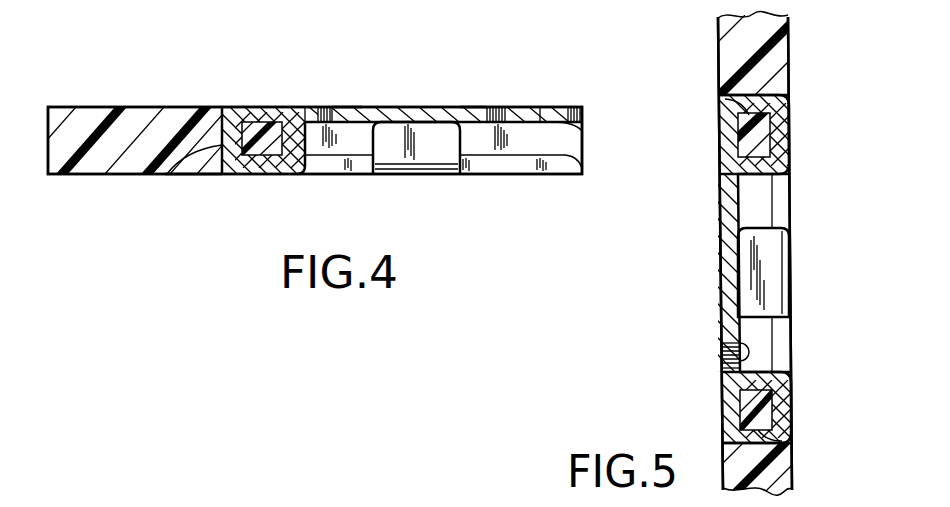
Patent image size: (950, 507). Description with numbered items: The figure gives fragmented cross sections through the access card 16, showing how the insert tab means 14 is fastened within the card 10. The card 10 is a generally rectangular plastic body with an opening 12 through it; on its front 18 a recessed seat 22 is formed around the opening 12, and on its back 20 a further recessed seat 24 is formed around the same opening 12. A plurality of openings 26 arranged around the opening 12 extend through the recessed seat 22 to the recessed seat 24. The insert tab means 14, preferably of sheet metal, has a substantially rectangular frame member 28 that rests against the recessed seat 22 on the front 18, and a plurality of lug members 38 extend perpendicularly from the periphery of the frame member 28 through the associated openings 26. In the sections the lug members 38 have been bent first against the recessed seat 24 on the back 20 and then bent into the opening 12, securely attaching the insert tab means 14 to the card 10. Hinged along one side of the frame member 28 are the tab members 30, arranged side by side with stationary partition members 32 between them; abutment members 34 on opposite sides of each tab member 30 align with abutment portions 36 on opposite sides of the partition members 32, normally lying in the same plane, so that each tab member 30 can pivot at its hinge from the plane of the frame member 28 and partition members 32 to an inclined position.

In FIG. 4, the card 10 is at (97, 119).
In FIG. 5, the card 10 is at (718, 40).
In FIG. 4, the opening 12 is at (560, 145).
In FIG. 5, the opening 12 is at (755, 220).
In FIG. 4, the insert tab means 14 is at (407, 96).
In FIG. 5, the insert tab means 14 is at (719, 242).
In FIG. 4, the access card 16 is at (211, 68).
In FIG. 5, the access card 16 is at (798, 50).
In FIG. 4, the front 18 is at (146, 107).
In FIG. 5, the front 18 is at (718, 68).
In FIG. 4, the back 20 is at (194, 175).
In FIG. 5, the back 20 is at (793, 467).
In FIG. 4, the recessed seat 22 is at (257, 123).
In FIG. 5, the recessed seat 22 is at (745, 145).
In FIG. 4, the recessed seat 24 is at (268, 164).
In FIG. 5, the recessed seat 24 is at (772, 145).
In FIG. 4, the openings 26 is at (167, 176).
In FIG. 5, the openings 26 is at (720, 104).
In FIG. 4, the frame member 28 is at (250, 107).
In FIG. 5, the frame member 28 is at (722, 398).
In FIG. 4, the tab members 30 is at (433, 108).
In FIG. 5, the tab members 30 is at (727, 287).
In FIG. 4, the partition members 32 is at (306, 107).
In FIG. 4, the abutment members 34 is at (345, 107).
In FIG. 4, the abutment portions 36 is at (323, 107).
In FIG. 4, the lug members 38 is at (276, 166).
In FIG. 5, the lug members 38 is at (780, 124).